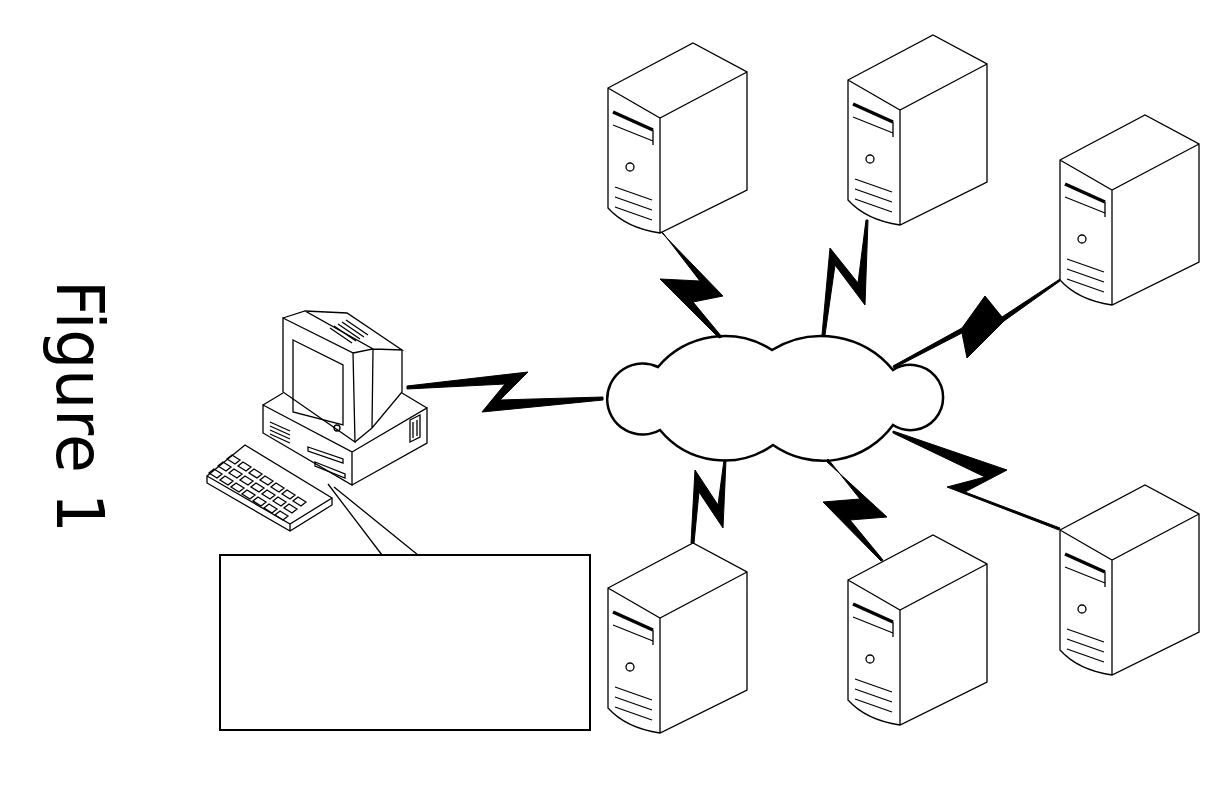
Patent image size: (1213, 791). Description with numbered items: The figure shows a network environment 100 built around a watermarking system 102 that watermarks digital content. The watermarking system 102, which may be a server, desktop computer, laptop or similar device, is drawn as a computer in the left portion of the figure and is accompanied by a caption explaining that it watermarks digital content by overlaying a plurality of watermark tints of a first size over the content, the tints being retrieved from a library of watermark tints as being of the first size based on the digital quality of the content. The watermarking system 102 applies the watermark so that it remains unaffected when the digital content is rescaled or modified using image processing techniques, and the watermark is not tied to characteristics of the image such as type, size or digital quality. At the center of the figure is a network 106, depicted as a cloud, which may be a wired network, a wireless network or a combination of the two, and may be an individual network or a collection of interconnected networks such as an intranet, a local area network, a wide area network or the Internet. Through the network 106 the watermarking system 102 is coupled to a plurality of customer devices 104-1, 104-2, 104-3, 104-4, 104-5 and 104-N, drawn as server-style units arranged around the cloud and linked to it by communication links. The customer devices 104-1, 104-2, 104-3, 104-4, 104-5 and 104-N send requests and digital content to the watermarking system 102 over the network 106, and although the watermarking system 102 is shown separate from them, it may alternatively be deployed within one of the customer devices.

The network environment 100 is at (460, 147).
The watermarking system 102 is at (273, 403).
The customer device 104-1 is at (747, 93).
The customer device 104-2 is at (987, 122).
The customer device 104-3 is at (1060, 280).
The customer device 104-4 is at (1063, 650).
The customer device 104-5 is at (928, 712).
The customer device 104-N is at (747, 585).
The network 106 is at (793, 429).